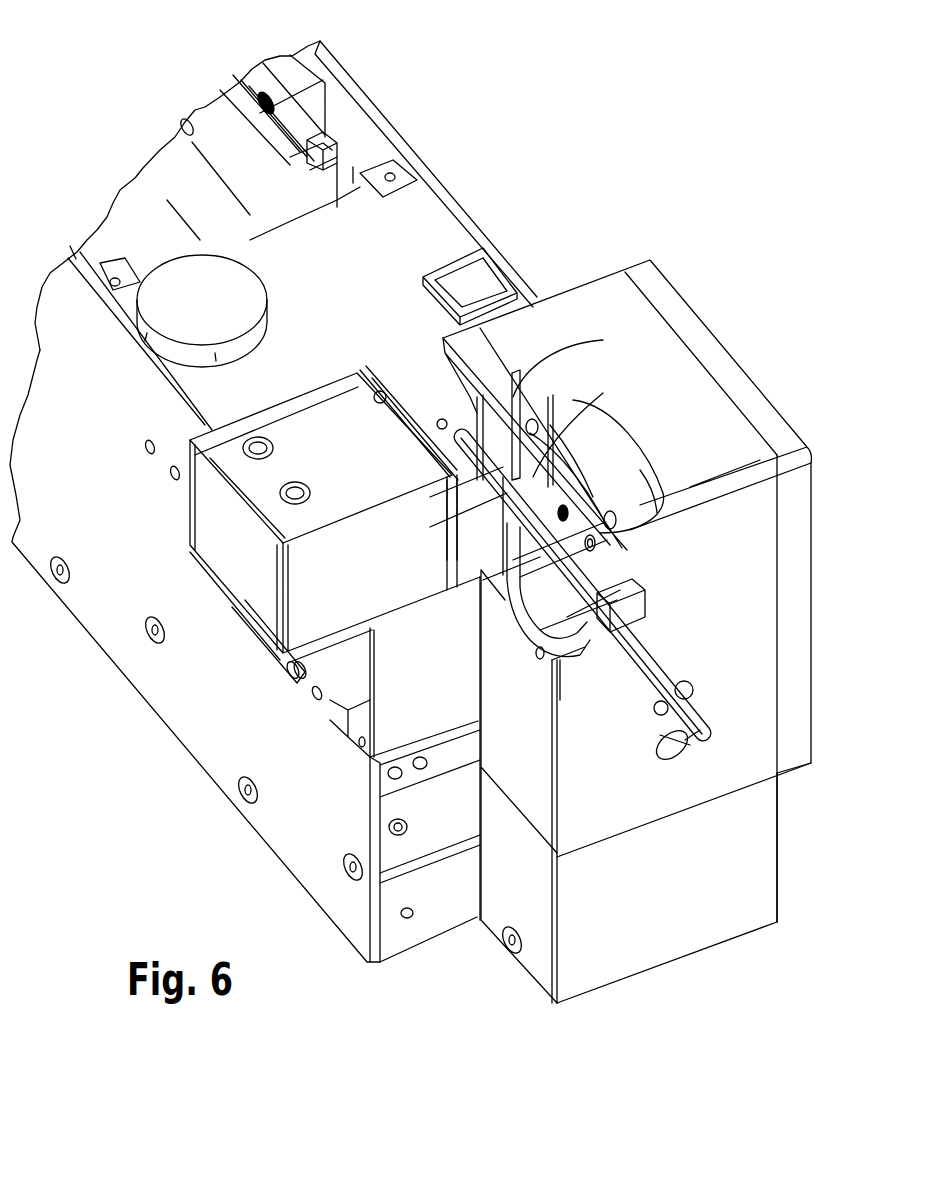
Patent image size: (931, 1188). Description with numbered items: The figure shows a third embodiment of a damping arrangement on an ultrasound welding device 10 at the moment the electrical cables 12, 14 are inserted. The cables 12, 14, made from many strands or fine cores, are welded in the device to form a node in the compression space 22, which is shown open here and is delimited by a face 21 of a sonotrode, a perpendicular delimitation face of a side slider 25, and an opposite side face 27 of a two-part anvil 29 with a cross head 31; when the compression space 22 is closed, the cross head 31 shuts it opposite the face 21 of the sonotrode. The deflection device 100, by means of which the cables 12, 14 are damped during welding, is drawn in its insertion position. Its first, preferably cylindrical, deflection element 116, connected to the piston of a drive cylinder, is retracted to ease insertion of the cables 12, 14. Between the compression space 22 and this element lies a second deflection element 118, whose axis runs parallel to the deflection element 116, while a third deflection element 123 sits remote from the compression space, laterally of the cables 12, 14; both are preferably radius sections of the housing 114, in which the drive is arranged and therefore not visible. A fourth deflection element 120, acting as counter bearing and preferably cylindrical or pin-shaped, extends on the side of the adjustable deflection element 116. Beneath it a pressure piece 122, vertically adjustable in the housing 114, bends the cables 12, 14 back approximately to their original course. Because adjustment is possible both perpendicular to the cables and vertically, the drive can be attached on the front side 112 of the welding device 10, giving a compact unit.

The ultrasound welding device 10 is at (518, 108).
The electrical cable 12 is at (628, 663).
The electrical cable 14 is at (655, 662).
The face of the sonotrode 21 is at (527, 463).
The compression space 22 is at (605, 520).
The side slider 25 is at (470, 477).
The side face of the anvil 27 is at (555, 495).
The two-part anvil 29 is at (450, 420).
The cross head 31 is at (537, 490).
The deflection device 100 is at (755, 541).
The front side 112 is at (456, 688).
The housing 114 is at (725, 850).
The first deflection element 116 is at (617, 490).
The second deflection element 118 is at (535, 617).
The fourth deflection element 120 is at (643, 610).
The pressure piece 122 is at (635, 575).
The third deflection element 123 is at (583, 657).